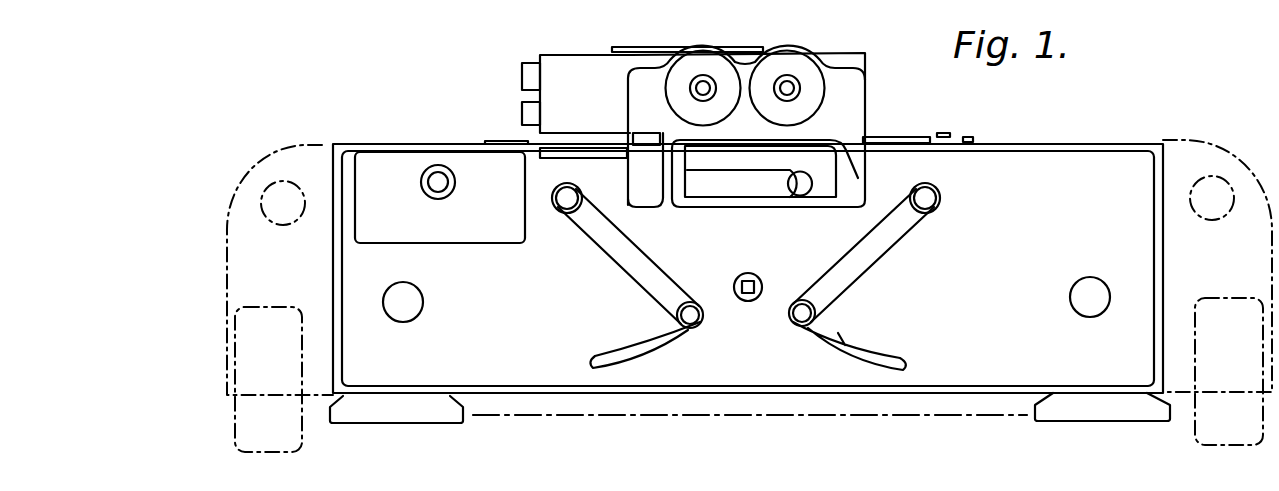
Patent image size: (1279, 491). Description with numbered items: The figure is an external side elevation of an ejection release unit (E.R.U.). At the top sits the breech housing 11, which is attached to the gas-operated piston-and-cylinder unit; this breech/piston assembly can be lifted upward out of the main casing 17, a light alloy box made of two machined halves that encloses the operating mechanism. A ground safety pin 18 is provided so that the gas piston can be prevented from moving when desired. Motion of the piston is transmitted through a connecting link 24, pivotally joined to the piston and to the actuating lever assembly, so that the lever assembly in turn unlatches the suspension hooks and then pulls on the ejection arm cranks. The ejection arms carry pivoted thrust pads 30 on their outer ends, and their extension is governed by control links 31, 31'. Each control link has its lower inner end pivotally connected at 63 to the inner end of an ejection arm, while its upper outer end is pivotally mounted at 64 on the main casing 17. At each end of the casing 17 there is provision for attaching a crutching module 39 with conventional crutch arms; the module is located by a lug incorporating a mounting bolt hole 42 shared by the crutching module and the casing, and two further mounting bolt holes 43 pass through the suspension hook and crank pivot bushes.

The breech housing 11 is at (852, 82).
The main casing 17 is at (1052, 158).
The ground safety pin 18 is at (438, 181).
The connecting link 24 is at (730, 186).
The thrust pads 30 is at (392, 412).
The control link 31 is at (628, 256).
The control link 31' is at (863, 255).
The crutching module 39 is at (233, 276).
The mounting bolt hole 42 is at (1222, 183).
The mounting bolt holes 43 is at (1090, 287).
The pivotal connection 63 is at (798, 315).
The pivot 64 is at (566, 201).